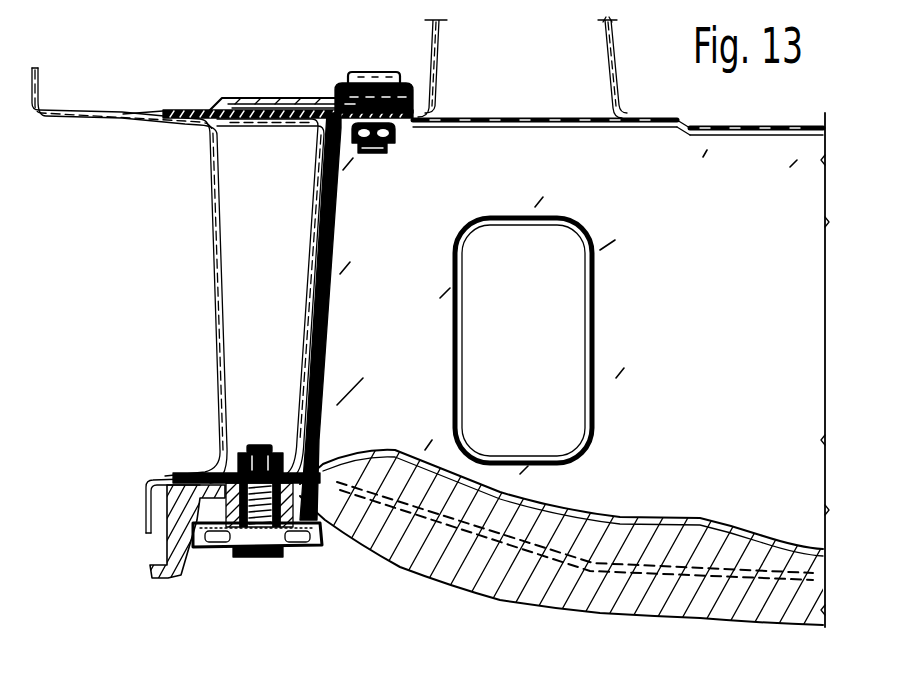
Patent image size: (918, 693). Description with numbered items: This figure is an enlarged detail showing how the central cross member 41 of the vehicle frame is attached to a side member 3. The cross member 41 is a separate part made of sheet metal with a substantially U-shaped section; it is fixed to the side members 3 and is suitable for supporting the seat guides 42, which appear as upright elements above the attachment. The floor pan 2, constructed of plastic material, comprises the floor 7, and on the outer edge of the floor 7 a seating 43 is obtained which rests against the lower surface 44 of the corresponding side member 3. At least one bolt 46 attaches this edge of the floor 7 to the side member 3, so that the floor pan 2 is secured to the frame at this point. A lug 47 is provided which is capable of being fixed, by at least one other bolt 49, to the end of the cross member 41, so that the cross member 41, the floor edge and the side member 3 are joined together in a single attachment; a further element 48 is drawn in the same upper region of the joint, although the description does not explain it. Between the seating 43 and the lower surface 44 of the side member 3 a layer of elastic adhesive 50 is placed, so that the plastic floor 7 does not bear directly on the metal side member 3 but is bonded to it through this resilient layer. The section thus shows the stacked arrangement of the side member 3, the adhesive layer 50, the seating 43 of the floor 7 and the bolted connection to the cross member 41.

The floor pan 2 is at (406, 577).
The side member 3 is at (68, 104).
The floor 7 is at (493, 553).
The cross member 41 is at (811, 200).
The seat guides 42 is at (616, 79).
The seating 43 is at (200, 470).
The lower surface 44 is at (186, 486).
The bolt 46 is at (258, 558).
The lug 47 is at (277, 97).
The sealing strip 48 is at (188, 108).
The bolt 49 is at (377, 72).
The layer of elastic adhesive 50 is at (187, 476).